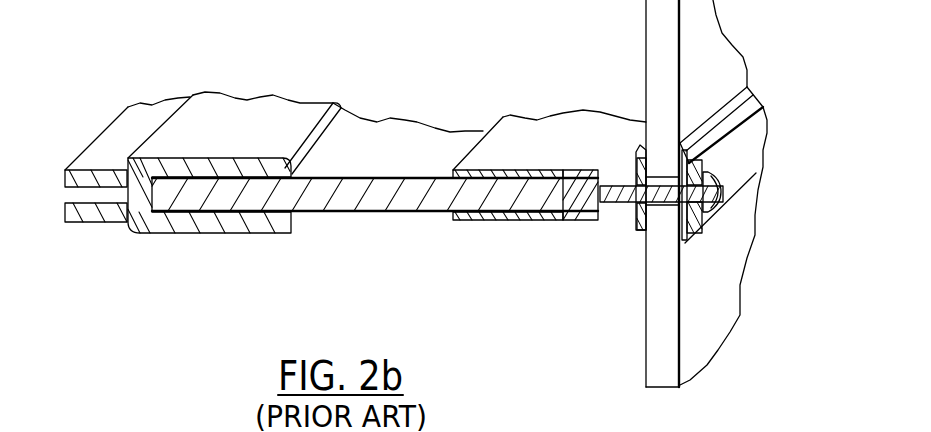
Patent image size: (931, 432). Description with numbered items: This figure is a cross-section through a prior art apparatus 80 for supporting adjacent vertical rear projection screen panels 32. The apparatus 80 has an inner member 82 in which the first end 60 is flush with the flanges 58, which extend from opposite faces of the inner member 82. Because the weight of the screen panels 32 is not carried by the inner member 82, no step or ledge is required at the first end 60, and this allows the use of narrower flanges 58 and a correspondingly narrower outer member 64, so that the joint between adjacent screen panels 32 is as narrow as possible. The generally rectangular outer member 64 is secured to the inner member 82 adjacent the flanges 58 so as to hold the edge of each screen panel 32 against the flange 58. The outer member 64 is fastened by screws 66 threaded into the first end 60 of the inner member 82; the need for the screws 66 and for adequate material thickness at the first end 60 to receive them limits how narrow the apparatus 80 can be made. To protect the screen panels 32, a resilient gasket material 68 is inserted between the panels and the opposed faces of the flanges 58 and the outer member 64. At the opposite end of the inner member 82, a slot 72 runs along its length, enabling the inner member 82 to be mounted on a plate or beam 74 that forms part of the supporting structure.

The screen panel 32 is at (718, 33).
The flange 58 is at (636, 148).
The first end 60 is at (645, 176).
The outer member 64 is at (755, 135).
The screw 66 is at (724, 193).
The resilient gasket material 68 is at (647, 222).
The slot 72 is at (480, 195).
The plate or beam 74 is at (387, 137).
The apparatus 80 is at (516, 272).
The inner member 82 is at (525, 135).